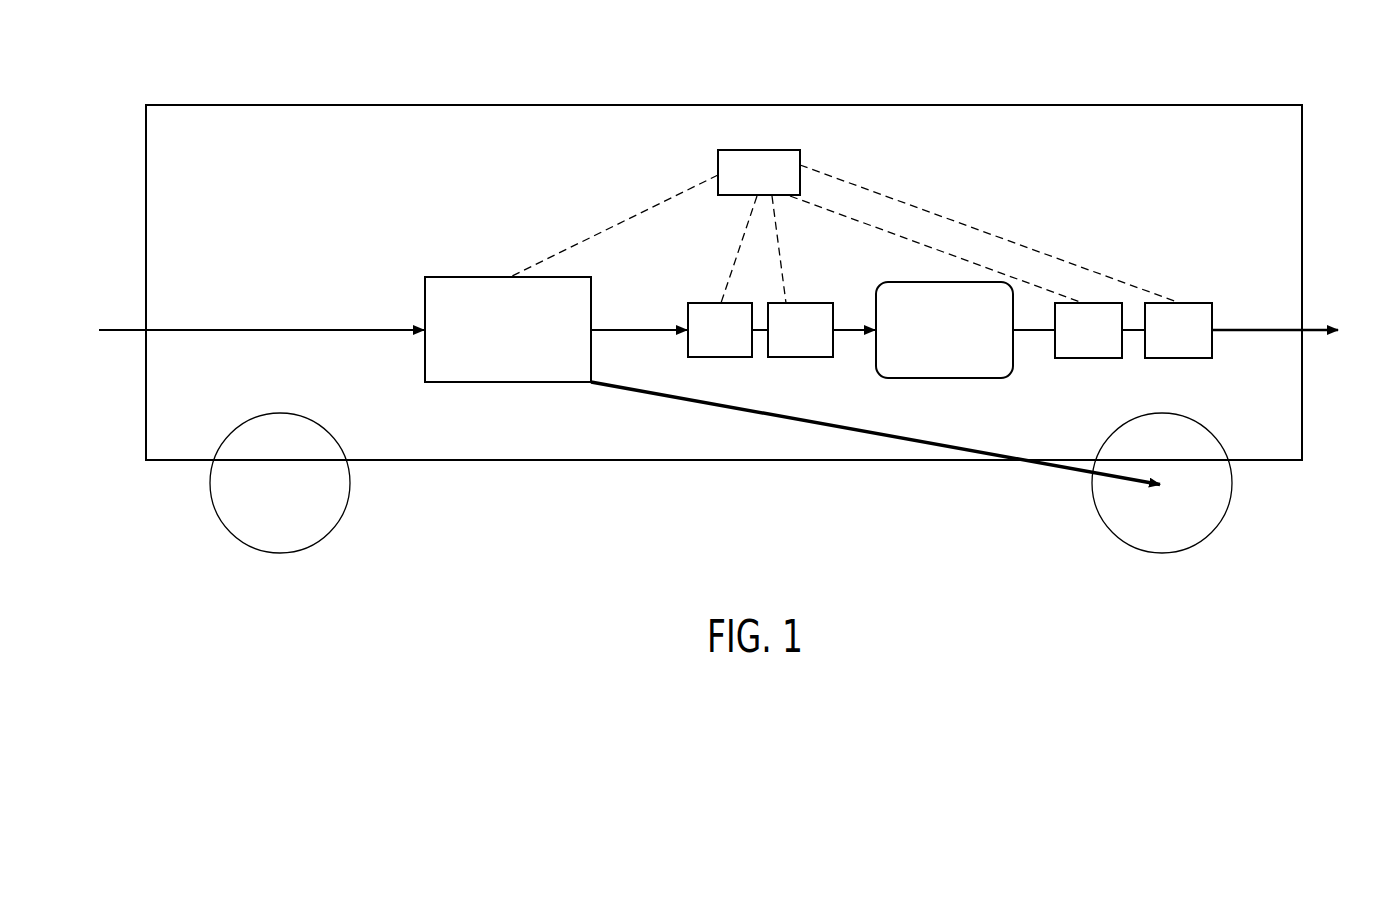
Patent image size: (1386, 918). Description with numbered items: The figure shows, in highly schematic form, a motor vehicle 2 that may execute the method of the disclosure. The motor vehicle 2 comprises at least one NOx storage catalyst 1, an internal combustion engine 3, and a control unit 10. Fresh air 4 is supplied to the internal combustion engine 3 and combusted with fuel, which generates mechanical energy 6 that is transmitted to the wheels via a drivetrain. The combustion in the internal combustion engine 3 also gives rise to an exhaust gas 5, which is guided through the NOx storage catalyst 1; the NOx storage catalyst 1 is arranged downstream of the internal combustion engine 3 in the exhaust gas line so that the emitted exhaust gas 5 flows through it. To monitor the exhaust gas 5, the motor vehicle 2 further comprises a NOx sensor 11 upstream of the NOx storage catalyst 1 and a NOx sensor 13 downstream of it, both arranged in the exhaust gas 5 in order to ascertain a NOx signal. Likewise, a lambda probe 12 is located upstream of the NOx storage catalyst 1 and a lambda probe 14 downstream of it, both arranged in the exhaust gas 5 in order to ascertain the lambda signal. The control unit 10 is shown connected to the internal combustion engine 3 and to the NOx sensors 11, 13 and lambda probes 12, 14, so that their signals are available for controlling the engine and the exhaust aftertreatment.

The NOx storage catalyst 1 is at (955, 300).
The motor vehicle 2 is at (1302, 160).
The internal combustion engine 3 is at (455, 277).
The fresh air 4 is at (327, 330).
The exhaust gas 5 is at (620, 330).
The mechanical energy 6 is at (625, 385).
The control unit 10 is at (760, 150).
The NOx sensor 11 is at (727, 345).
The lambda probe 12 is at (797, 345).
The NOx sensor 13 is at (1090, 303).
The lambda probe 14 is at (1190, 303).